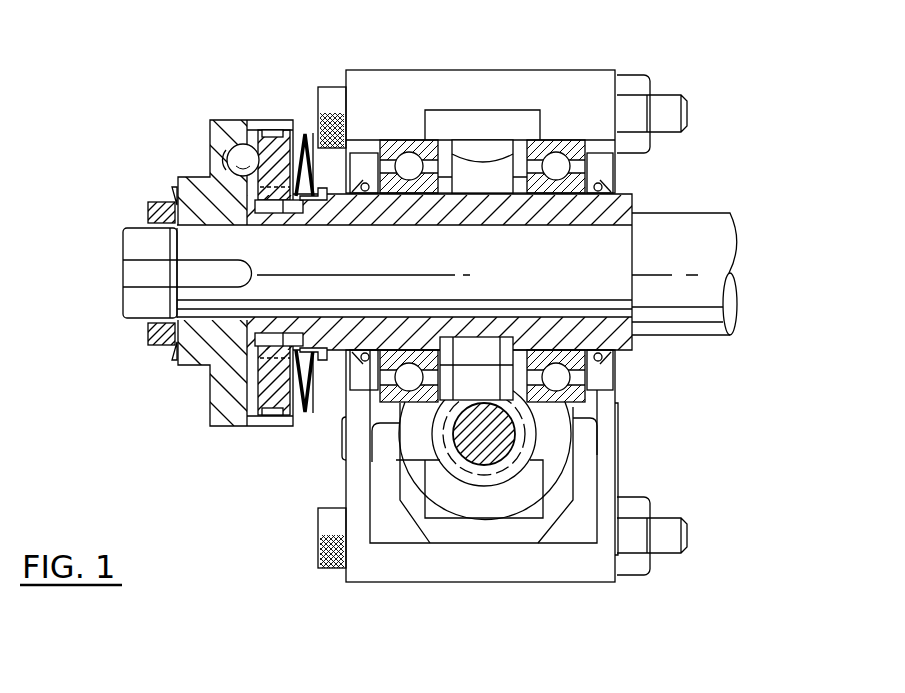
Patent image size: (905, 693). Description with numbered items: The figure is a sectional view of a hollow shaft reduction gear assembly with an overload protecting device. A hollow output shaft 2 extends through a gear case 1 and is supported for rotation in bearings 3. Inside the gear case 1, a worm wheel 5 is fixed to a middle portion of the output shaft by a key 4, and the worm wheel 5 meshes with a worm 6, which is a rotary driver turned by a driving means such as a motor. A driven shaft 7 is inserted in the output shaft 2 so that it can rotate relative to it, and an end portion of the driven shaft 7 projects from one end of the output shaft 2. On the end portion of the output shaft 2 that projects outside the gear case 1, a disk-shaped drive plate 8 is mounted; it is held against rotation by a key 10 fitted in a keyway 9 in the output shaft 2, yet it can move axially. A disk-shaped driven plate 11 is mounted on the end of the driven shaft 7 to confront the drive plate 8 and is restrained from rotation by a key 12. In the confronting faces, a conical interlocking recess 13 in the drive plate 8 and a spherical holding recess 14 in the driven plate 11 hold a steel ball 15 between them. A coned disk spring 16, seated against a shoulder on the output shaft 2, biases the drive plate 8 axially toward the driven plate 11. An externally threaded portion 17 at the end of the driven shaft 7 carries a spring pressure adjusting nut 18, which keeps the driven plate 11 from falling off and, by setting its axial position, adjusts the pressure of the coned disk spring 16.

The gear case 1 is at (590, 90).
The hollow output shaft 2 is at (613, 333).
The bearings 3 is at (403, 140).
The key 4 is at (484, 350).
The worm wheel 5 is at (488, 147).
The worm 6 is at (484, 457).
The driven shaft 7 is at (707, 228).
The drive plate 8 is at (255, 123).
The keyway 9 is at (306, 207).
The key 10 is at (260, 212).
The driven plate 11 is at (205, 348).
The key 12 is at (135, 276).
The conical interlocking recess 13 is at (298, 118).
The spherical holding recess 14 is at (230, 160).
The steel ball 15 is at (236, 150).
The coned disk spring 16 is at (312, 382).
The externally threaded portion 17 is at (150, 325).
The spring pressure adjusting nut 18 is at (148, 218).